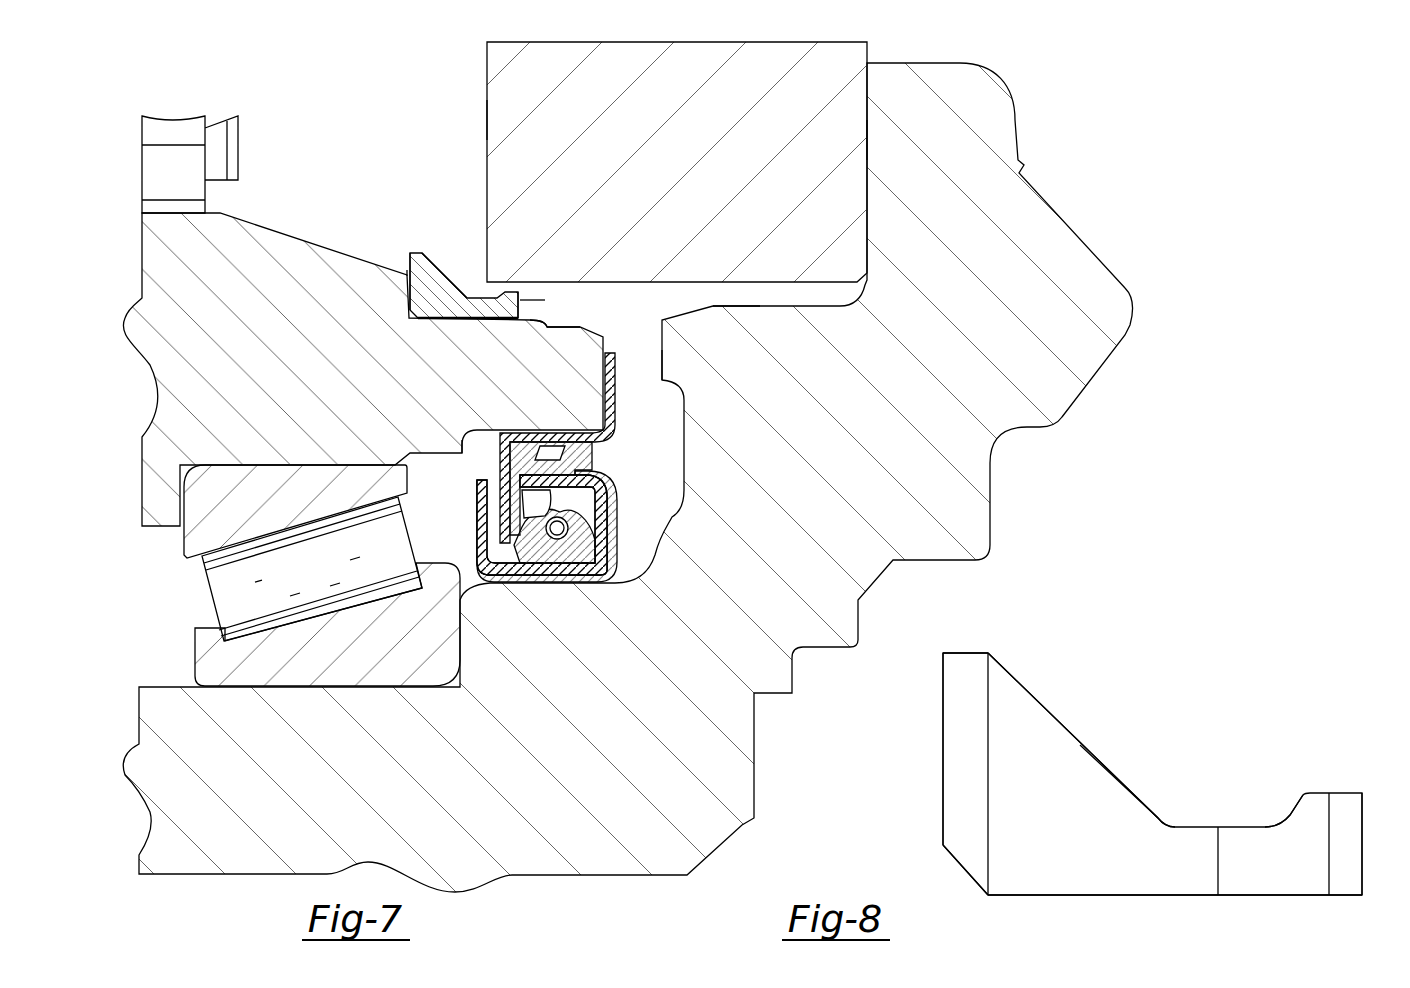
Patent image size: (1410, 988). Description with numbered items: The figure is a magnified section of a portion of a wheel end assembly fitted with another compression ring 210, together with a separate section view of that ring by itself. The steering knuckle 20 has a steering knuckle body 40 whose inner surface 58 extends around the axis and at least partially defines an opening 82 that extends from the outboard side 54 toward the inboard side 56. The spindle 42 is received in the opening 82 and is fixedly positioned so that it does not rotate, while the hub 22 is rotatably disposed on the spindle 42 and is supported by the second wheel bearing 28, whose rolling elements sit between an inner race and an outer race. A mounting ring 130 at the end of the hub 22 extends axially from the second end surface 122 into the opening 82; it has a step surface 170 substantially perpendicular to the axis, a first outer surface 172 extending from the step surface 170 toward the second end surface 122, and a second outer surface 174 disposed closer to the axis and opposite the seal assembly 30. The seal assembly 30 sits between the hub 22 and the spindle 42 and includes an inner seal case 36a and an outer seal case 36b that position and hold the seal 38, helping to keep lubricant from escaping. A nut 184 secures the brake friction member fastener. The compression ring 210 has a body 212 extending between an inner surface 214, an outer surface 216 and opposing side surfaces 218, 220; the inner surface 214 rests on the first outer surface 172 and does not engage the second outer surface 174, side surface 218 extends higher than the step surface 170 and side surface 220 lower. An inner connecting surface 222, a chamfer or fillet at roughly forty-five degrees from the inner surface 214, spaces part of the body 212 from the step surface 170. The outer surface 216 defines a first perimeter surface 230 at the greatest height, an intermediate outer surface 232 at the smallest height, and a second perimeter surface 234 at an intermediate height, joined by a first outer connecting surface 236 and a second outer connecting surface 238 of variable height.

In FIG. 7, the steering knuckle 20 is at (677, 162).
In FIG. 7, the steering knuckle body 40 is at (648, 140).
In FIG. 7, the hub 22 is at (190, 392).
In FIG. 7, the second wheel bearing 28 is at (194, 652).
In FIG. 7, the seal assembly 30 is at (608, 503).
In FIG. 7, the inner seal case 36a is at (502, 582).
In FIG. 7, the outer seal case 36b is at (613, 428).
In FIG. 7, the seal 38 is at (603, 552).
In FIG. 7, the spindle 42 is at (1062, 203).
In FIG. 7, the outboard side 54 is at (486, 122).
In FIG. 7, the inboard side 56 is at (868, 137).
In FIG. 7, the inner surface 58 is at (540, 298).
In FIG. 7, the opening 82 is at (663, 295).
In FIG. 7, the second end surface 122 is at (607, 348).
In FIG. 7, the mounting ring 130 is at (458, 379).
In FIG. 7, the step surface 170 is at (411, 258).
In FIG. 7, the first outer surface 172 is at (533, 325).
In FIG. 7, the second outer surface 174 is at (560, 327).
In FIG. 7, the nut 184 is at (207, 190).
In FIG. 7, the compression ring 210 is at (464, 308).
In FIG. 8, the compression ring 210 is at (1119, 775).
In FIG. 7, the body 212 is at (452, 307).
In FIG. 8, the body 212 is at (1048, 831).
In FIG. 7, the inner surface 214 is at (424, 322).
In FIG. 8, the inner surface 214 is at (1140, 897).
In FIG. 7, the outer surface 216 is at (437, 274).
In FIG. 8, the outer surface 216 is at (1023, 690).
In FIG. 7, the side surface 218 is at (407, 263).
In FIG. 8, the side surface 218 is at (943, 775).
In FIG. 7, the side surface 220 is at (522, 308).
In FIG. 8, the side surface 220 is at (1362, 893).
In FIG. 8, the inner connecting surface 222 is at (960, 870).
In FIG. 8, the first perimeter surface 230 is at (966, 652).
In FIG. 8, the intermediate outer surface 232 is at (1235, 827).
In FIG. 8, the second perimeter surface 234 is at (1342, 793).
In FIG. 8, the first outer connecting surface 236 is at (1090, 750).
In FIG. 8, the second outer connecting surface 238 is at (1288, 818).